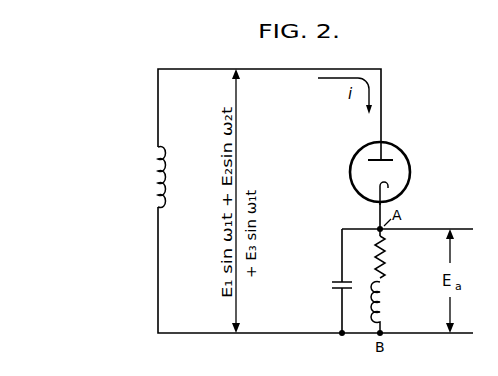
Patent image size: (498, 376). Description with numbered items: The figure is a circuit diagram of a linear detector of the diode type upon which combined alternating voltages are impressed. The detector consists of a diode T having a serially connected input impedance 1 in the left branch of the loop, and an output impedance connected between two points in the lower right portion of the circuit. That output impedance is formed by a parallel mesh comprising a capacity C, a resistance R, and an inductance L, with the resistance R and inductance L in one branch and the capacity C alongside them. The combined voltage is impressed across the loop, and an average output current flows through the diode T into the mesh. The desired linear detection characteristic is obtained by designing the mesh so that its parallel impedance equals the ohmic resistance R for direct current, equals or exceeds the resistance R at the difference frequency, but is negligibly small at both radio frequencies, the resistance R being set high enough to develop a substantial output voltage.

The input impedance 1 is at (152, 183).
The diode T is at (408, 162).
The capacity C is at (332, 281).
The resistance R is at (387, 257).
The inductance L is at (383, 307).